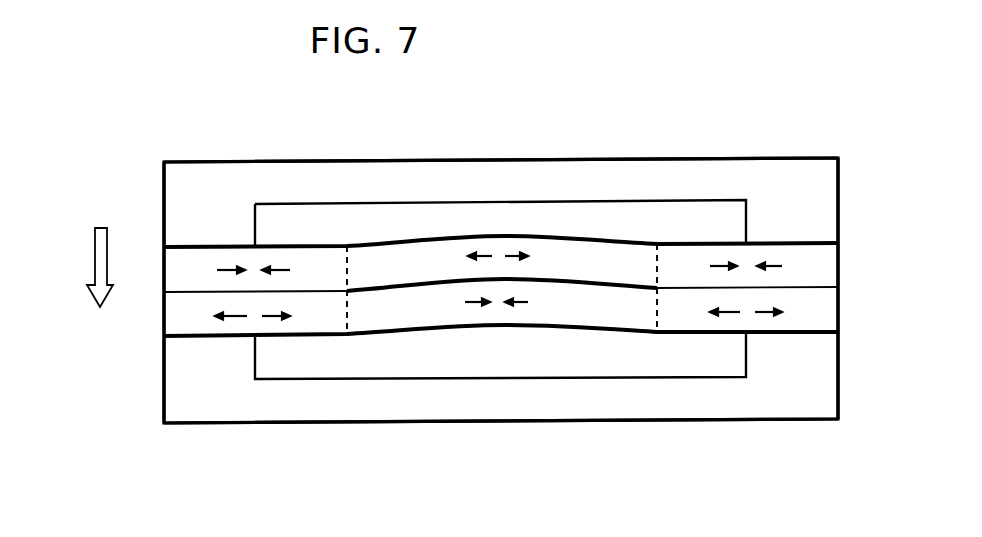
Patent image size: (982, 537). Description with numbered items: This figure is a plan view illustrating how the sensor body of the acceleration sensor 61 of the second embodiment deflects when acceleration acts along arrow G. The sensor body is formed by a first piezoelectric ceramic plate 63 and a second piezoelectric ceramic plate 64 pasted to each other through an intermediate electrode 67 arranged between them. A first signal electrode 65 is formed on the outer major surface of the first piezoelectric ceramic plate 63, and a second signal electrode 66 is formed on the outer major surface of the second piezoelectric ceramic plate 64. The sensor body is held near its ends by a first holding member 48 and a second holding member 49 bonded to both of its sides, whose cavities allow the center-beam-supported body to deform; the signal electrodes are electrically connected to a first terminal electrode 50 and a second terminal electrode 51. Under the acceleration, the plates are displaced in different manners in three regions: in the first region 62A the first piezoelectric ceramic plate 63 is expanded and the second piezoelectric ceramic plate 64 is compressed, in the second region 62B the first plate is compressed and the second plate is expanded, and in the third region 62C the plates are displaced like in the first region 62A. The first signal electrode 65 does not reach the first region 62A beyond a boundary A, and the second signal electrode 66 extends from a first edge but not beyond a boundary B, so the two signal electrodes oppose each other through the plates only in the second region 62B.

The first holding member 48 is at (223, 162).
The second holding member 49 is at (222, 423).
The first terminal electrode 50 is at (838, 193).
The second terminal electrode 51 is at (164, 202).
The acceleration sensor 61 is at (140, 412).
The first region 62A is at (308, 313).
The second region 62B is at (555, 305).
The third region 62C is at (677, 265).
The first piezoelectric ceramic plate 63 is at (432, 308).
The second piezoelectric ceramic plate 64 is at (443, 250).
The first signal electrode 65 is at (390, 333).
The second signal electrode 66 is at (400, 237).
The intermediate electrode 67 is at (597, 280).
The boundary A is at (347, 246).
The boundary B is at (655, 305).
The arrow G is at (84, 267).